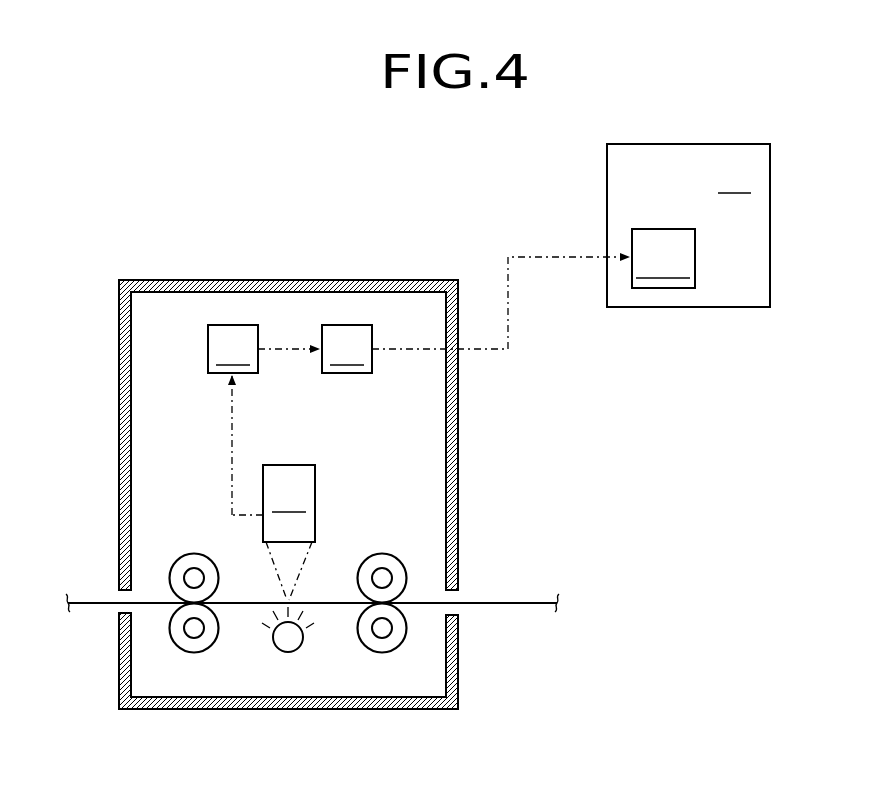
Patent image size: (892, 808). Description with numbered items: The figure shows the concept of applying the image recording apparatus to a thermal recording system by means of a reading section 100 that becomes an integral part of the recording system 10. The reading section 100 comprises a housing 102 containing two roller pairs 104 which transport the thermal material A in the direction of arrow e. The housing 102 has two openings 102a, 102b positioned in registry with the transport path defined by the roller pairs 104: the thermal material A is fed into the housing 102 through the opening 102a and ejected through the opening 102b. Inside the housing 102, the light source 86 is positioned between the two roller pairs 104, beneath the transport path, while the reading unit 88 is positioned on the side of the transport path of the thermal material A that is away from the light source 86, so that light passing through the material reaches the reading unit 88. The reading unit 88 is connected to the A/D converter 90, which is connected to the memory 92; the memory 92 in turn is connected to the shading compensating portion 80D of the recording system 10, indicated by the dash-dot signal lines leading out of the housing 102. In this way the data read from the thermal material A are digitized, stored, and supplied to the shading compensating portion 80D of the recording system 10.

The reading section 100 is at (440, 258).
The housing 102 is at (459, 468).
The opening 102a is at (465, 596).
The opening 102b is at (109, 604).
The roller pairs 104 is at (192, 556).
The reading unit 88 is at (289, 532).
The light source 86 is at (290, 638).
The A/D converter 90 is at (235, 420).
The memory 92 is at (443, 315).
The recording system 10 is at (688, 225).
The shading compensating portion 80D is at (663, 258).
The thermal material A is at (531, 608).
The arrow (transport direction) e is at (580, 603).